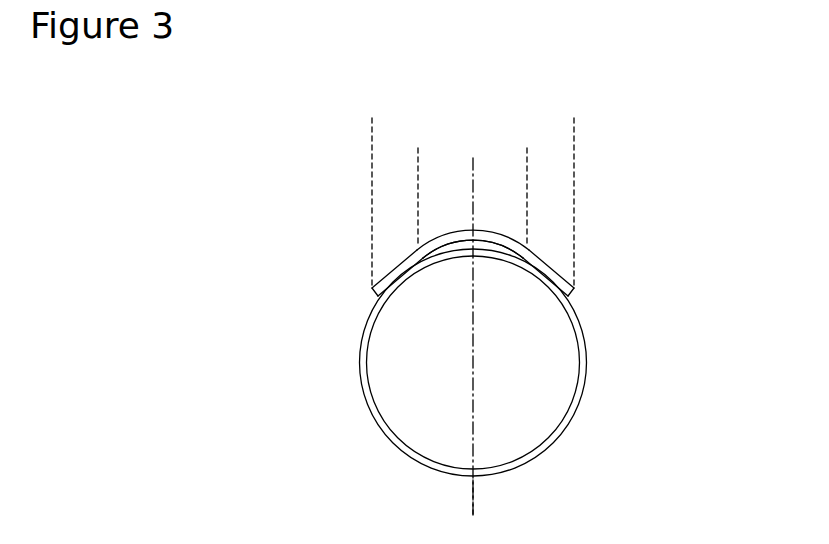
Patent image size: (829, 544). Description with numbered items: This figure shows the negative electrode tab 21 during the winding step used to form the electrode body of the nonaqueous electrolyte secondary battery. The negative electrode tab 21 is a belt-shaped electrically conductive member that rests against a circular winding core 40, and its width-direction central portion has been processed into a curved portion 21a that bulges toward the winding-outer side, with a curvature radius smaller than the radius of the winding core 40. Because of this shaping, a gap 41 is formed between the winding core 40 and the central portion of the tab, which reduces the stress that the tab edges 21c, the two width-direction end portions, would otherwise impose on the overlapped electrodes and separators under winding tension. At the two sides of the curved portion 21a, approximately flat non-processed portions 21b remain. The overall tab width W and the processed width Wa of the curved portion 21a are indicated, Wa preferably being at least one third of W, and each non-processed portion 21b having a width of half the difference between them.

The negative electrode tab 21 is at (474, 236).
The curved portion 21a is at (457, 229).
The non-processed portion 21b is at (390, 272).
The tab edge 21c is at (372, 297).
The winding core 40 is at (371, 415).
The gap 41 is at (482, 243).
The tab width W is at (574, 102).
The processed width of the curved portion Wa is at (527, 137).